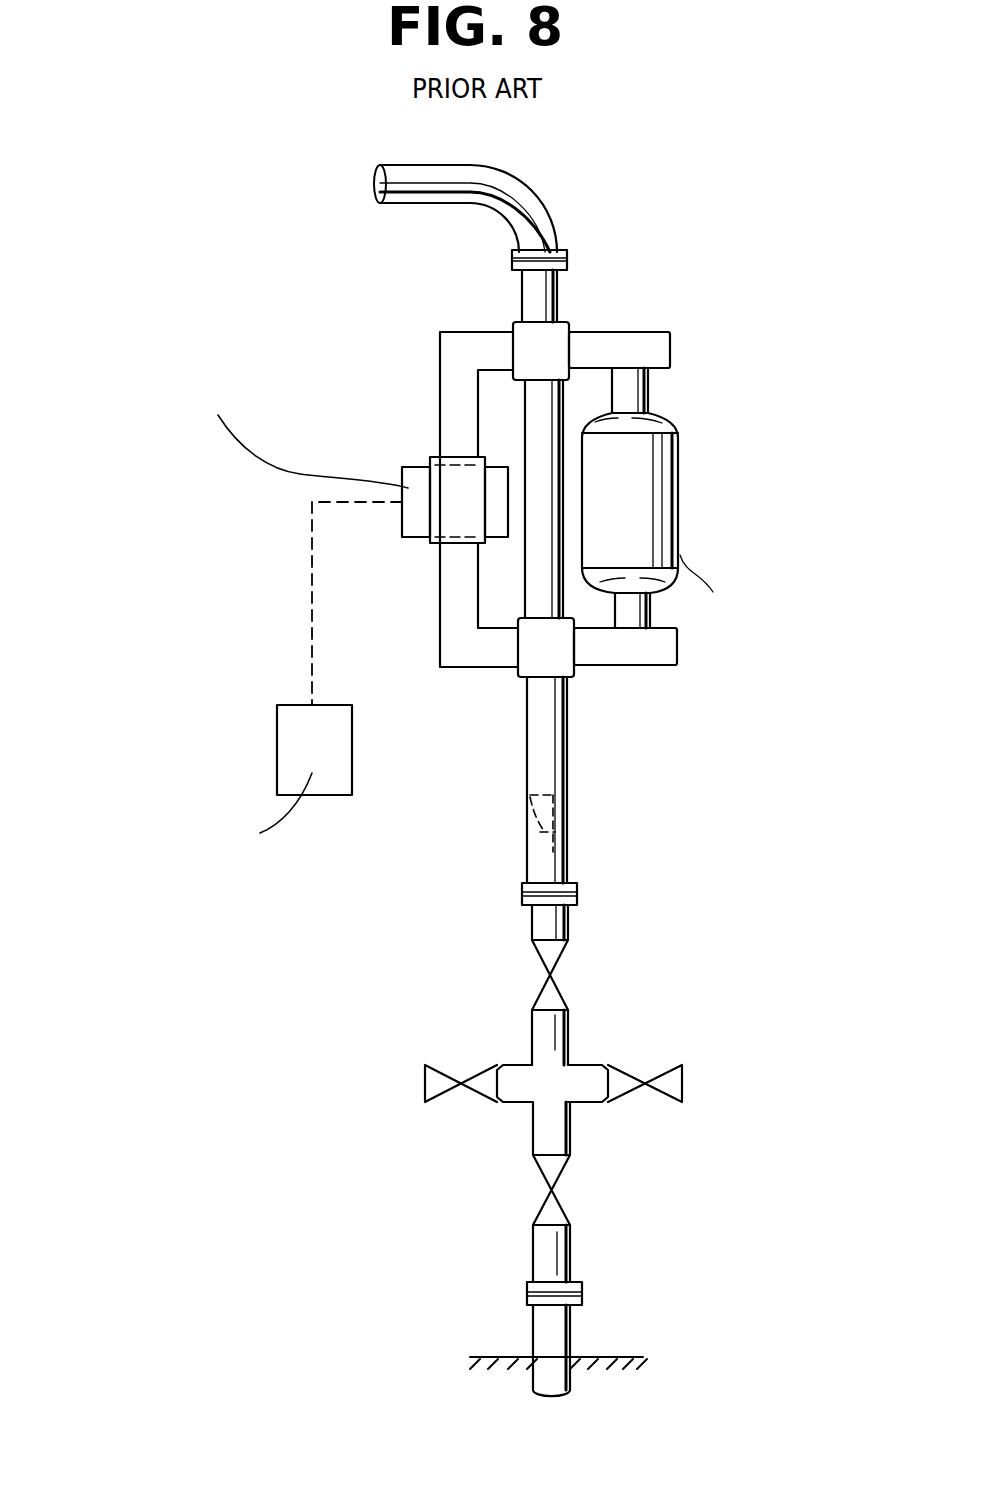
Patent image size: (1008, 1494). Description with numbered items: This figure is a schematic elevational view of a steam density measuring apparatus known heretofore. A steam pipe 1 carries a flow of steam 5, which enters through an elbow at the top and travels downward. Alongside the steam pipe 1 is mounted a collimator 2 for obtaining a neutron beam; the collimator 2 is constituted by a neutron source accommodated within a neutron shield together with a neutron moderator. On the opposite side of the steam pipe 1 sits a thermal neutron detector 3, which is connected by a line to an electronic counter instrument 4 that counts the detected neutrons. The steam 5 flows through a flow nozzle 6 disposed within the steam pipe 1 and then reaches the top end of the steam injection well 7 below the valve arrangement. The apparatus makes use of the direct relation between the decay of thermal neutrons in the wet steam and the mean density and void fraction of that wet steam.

The steam pipe 1 is at (557, 288).
The collimator 2 is at (679, 462).
The thermal neutron detector 3 is at (407, 457).
The electronic counter instrument 4 is at (277, 758).
The flow of steam 5 is at (358, 183).
The flow nozzle 6 is at (568, 825).
The steam injection well 7 is at (571, 1125).